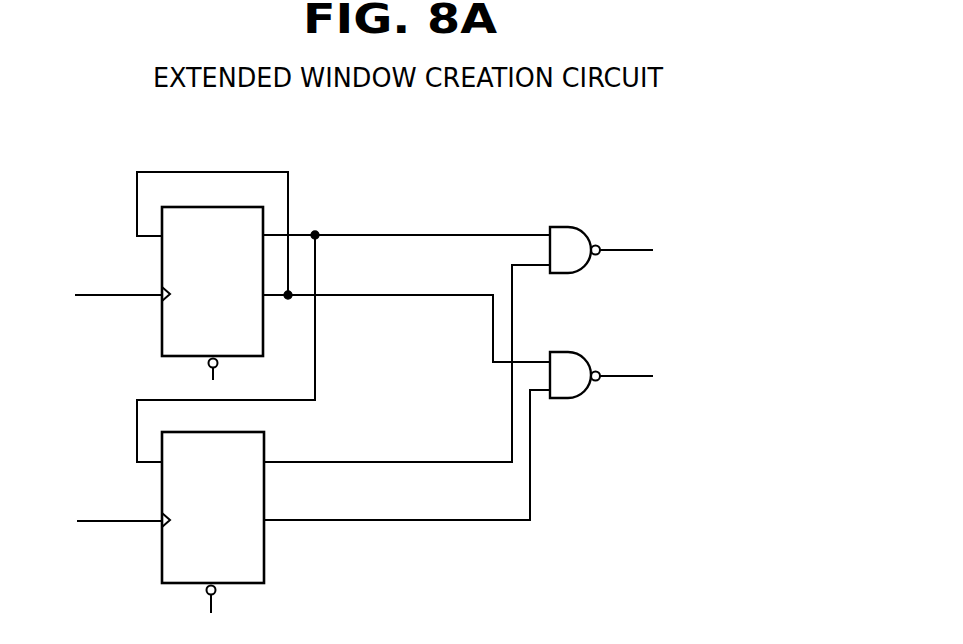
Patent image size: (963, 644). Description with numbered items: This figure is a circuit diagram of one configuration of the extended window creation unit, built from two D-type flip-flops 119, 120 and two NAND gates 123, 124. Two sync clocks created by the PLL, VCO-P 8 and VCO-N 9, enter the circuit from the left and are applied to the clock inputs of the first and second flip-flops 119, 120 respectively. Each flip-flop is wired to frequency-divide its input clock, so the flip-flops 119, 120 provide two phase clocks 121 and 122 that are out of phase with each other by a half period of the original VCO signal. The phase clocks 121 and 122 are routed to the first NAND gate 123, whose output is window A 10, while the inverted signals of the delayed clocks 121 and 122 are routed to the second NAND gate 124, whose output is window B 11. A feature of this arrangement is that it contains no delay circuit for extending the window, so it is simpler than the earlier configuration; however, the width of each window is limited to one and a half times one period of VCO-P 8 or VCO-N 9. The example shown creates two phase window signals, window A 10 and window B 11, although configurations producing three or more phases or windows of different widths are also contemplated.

The VCO-P 8 is at (68, 262).
The VCO-N 9 is at (68, 485).
The window A 10 is at (703, 233).
The window B 11 is at (703, 360).
The D-type flip-flop 119 is at (240, 208).
The D-type flip-flop 120 is at (250, 431).
The phase clock 121 is at (361, 235).
The phase clock 122 is at (421, 462).
The NAND 123 is at (566, 227).
The NAND 124 is at (574, 352).